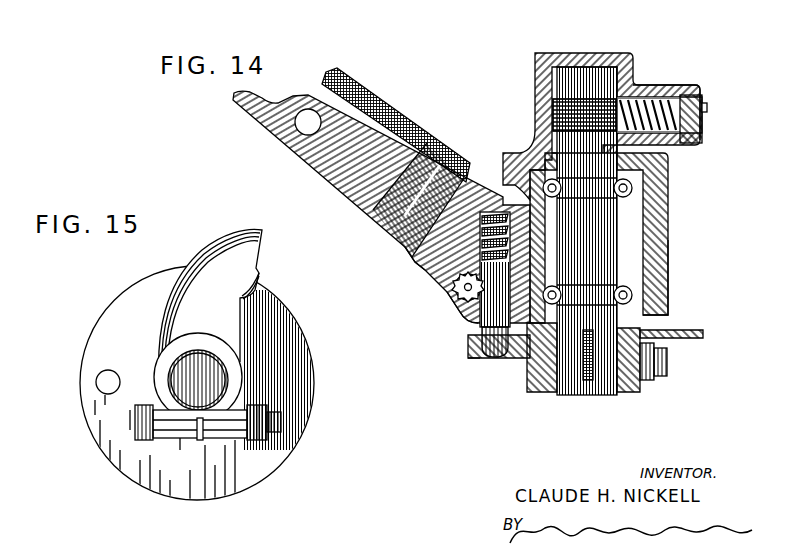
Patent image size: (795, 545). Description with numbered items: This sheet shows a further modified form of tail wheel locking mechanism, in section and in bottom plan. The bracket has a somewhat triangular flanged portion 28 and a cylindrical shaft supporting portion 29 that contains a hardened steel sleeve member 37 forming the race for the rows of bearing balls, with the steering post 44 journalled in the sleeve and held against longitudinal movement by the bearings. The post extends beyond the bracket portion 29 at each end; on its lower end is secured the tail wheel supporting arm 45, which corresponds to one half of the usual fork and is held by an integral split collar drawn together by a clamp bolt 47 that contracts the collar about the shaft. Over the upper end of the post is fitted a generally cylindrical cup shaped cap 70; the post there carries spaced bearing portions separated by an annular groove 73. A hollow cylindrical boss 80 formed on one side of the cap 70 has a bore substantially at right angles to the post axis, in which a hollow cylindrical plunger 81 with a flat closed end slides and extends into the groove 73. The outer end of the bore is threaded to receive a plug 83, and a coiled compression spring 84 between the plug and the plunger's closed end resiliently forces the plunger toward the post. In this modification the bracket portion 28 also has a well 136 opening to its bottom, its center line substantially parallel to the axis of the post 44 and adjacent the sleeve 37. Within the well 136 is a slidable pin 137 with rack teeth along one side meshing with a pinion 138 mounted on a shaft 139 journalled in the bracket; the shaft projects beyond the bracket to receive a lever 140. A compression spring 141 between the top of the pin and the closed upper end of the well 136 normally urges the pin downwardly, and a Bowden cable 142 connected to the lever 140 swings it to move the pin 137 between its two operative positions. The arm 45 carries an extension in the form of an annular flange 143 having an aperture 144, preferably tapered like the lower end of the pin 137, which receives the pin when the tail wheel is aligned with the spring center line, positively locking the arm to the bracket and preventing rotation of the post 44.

In FIG. 14, the flanged portion 28 is at (412, 240).
In FIG. 14, the cylindrical shaft supporting portion 29 is at (666, 263).
In FIG. 14, the sleeve member 37 is at (666, 206).
In FIG. 14, the steering post 44 is at (585, 393).
In FIG. 15, the steering post 44 is at (214, 382).
In FIG. 14, the arm 45 is at (633, 388).
In FIG. 15, the arm 45 is at (253, 269).
In FIG. 14, the clamp bolt 47 is at (668, 360).
In FIG. 15, the clamp bolt 47 is at (280, 424).
In FIG. 14, the cap 70 is at (546, 55).
In FIG. 14, the annular groove 73 is at (552, 113).
In FIG. 14, the hollow cylindrical boss 80 is at (638, 84).
In FIG. 14, the plunger 81 is at (650, 99).
In FIG. 14, the plug 83 is at (708, 108).
In FIG. 14, the coiled compression spring 84 is at (691, 96).
In FIG. 14, the well 136 is at (425, 263).
In FIG. 14, the slidable pin 137 is at (467, 343).
In FIG. 14, the pinion 138 is at (462, 326).
In FIG. 14, the shaft 139 is at (450, 300).
In FIG. 14, the lever 140 is at (432, 283).
In FIG. 14, the compression spring 141 is at (490, 210).
In FIG. 14, the Bowden cable 142 is at (388, 106).
In FIG. 14, the annular flange 143 is at (470, 359).
In FIG. 15, the annular flange 143 is at (80, 416).
In FIG. 14, the aperture 144 is at (492, 358).
In FIG. 15, the aperture 144 is at (97, 375).